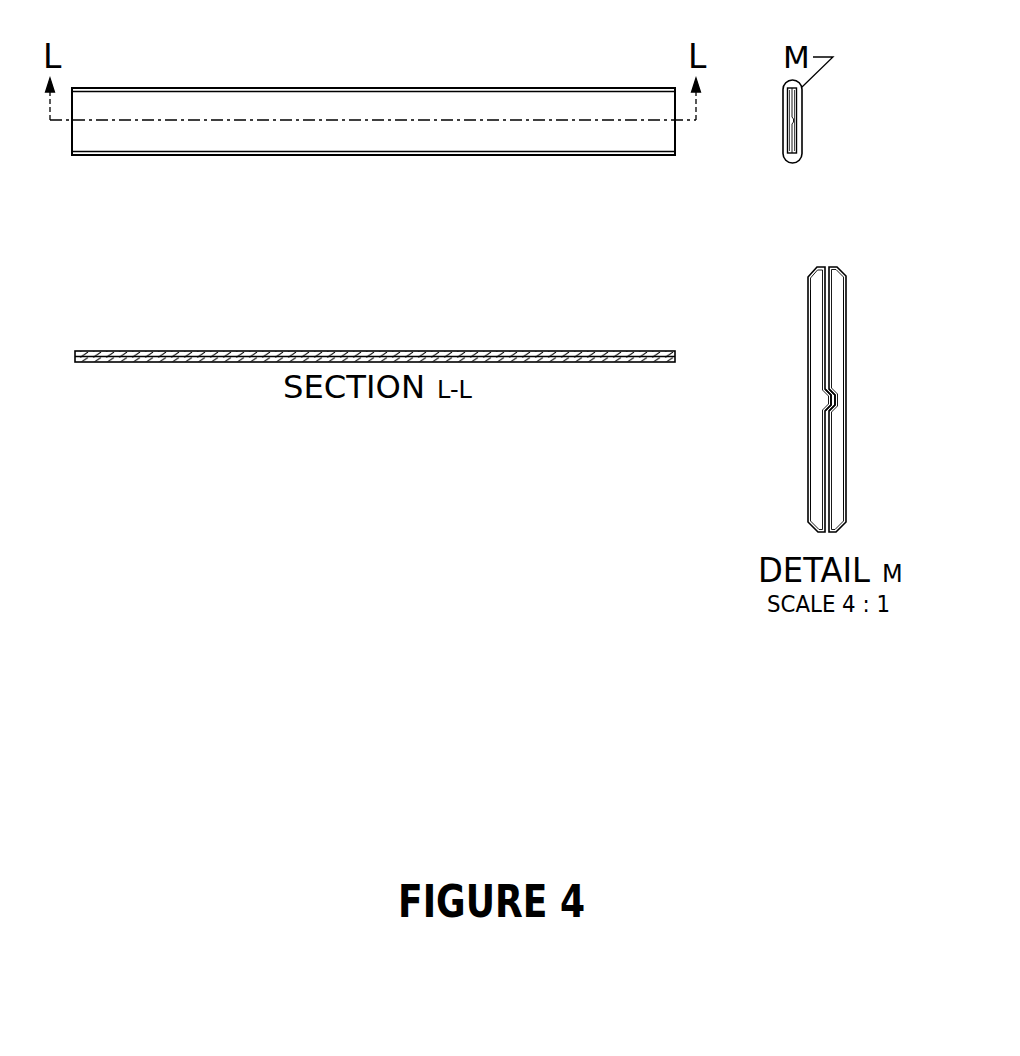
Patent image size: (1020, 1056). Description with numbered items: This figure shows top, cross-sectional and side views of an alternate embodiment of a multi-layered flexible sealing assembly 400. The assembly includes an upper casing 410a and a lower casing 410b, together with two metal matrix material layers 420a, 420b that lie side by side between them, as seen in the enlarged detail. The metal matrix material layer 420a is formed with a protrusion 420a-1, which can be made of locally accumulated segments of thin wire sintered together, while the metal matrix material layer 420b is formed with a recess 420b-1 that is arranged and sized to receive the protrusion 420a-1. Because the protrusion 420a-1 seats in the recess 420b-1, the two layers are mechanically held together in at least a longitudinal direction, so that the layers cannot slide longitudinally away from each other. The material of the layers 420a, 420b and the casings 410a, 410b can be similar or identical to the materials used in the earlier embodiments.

The sealing assembly 400 is at (744, 311).
The upper casing 410a is at (472, 105).
The lower casing 410b is at (847, 303).
The metal matrix material layer 420a is at (818, 463).
The metal matrix material layer 420b is at (836, 338).
The protrusion 420a-1 is at (827, 397).
The recess 420b-1 is at (833, 397).